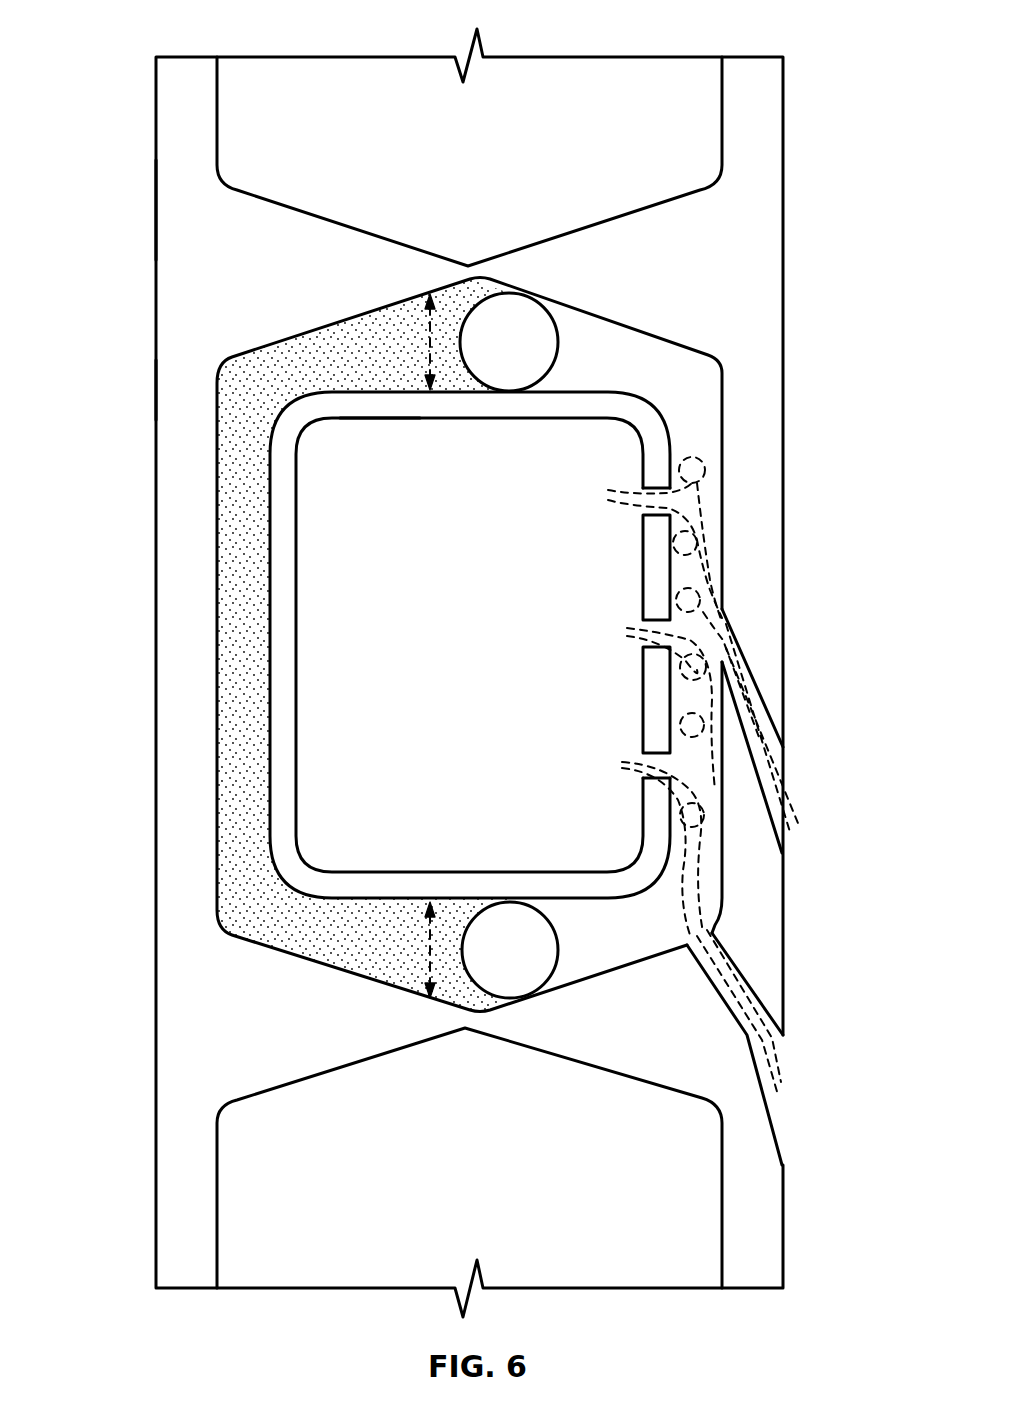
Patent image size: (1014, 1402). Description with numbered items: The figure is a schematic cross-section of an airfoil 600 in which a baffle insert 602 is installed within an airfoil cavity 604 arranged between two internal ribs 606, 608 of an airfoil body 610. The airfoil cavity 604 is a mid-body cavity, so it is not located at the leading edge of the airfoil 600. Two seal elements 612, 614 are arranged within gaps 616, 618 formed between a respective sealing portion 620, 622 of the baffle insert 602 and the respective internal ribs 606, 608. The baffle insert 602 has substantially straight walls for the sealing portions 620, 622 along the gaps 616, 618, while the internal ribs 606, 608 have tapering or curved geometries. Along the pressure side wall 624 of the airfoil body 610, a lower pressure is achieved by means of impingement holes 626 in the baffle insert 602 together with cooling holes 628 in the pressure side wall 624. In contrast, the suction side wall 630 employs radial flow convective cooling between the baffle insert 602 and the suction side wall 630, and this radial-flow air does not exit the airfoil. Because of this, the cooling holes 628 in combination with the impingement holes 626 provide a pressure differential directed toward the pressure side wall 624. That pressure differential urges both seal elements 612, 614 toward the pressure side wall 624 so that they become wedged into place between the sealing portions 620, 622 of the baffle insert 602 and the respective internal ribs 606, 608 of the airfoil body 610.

The airfoil 600 is at (104, 38).
The baffle insert 602 is at (285, 626).
The airfoil cavity 604 is at (670, 382).
The internal rib 606 is at (283, 1072).
The internal rib 608 is at (600, 240).
The airfoil body 610 is at (232, 250).
The seal element 612 is at (510, 950).
The seal element 614 is at (508, 340).
The gap 616 is at (430, 962).
The gap 618 is at (428, 333).
The sealing portion 620 is at (418, 880).
The sealing portion 622 is at (380, 408).
The pressure side wall 624 is at (784, 446).
The impingement holes 626 is at (612, 511).
The cooling holes 628 is at (800, 748).
The suction side wall 630 is at (158, 400).